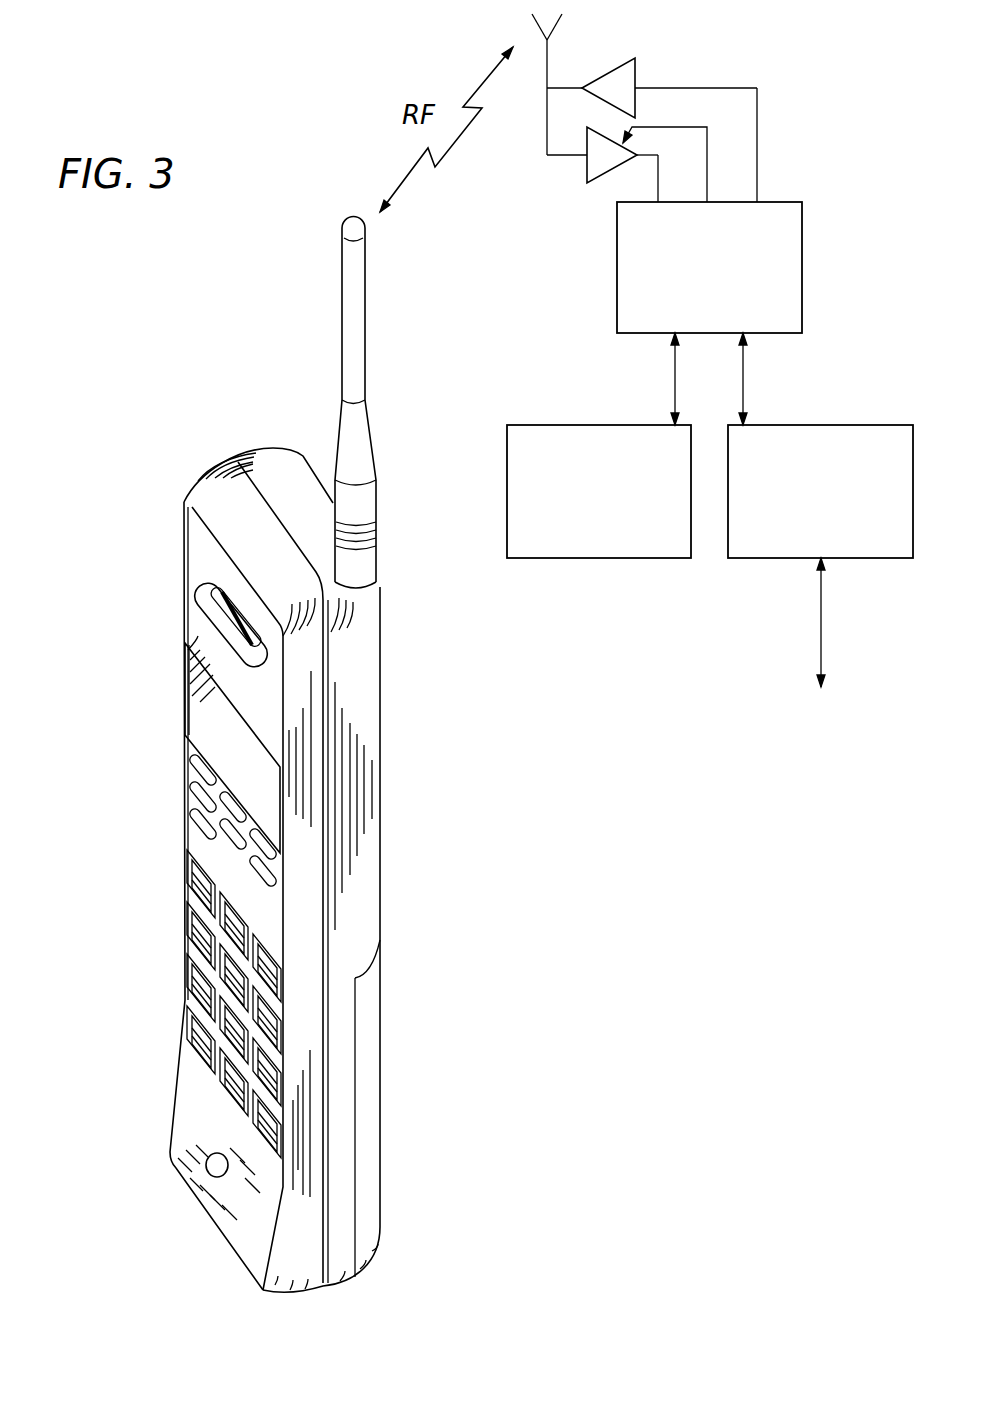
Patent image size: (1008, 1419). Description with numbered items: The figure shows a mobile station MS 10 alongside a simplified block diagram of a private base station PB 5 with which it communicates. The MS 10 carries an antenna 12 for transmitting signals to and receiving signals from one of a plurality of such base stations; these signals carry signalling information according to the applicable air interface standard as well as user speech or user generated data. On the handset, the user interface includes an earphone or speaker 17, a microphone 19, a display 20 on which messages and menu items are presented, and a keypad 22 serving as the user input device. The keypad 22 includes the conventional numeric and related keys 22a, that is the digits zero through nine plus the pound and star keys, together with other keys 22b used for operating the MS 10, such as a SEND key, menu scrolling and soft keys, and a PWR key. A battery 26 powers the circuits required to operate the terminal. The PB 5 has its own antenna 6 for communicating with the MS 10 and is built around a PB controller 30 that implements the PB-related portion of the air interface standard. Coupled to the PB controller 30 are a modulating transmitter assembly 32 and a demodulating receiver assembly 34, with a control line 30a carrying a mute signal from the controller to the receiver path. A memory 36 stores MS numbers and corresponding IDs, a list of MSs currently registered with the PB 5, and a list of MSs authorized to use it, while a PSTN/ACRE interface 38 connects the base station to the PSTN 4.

The PSTN 4 is at (820, 620).
The PB 5 is at (553, 287).
The antenna 6 is at (558, 30).
The MS 10 is at (425, 678).
The antenna 12 is at (353, 347).
The speaker 17 is at (222, 603).
The microphone 19 is at (212, 1172).
The display 20 is at (208, 726).
The keypad 22 is at (280, 1022).
The numeric and related keys 22a is at (236, 920).
The other keys 22b is at (228, 812).
The battery 26 is at (365, 1128).
The PB controller 30 is at (802, 247).
The mute control line 30a is at (708, 163).
The modulating transmitter assembly 32 is at (636, 66).
The demodulating receiver assembly 34 is at (587, 170).
The memory 36 is at (638, 425).
The PSTN/ACRE interface 38 is at (783, 425).